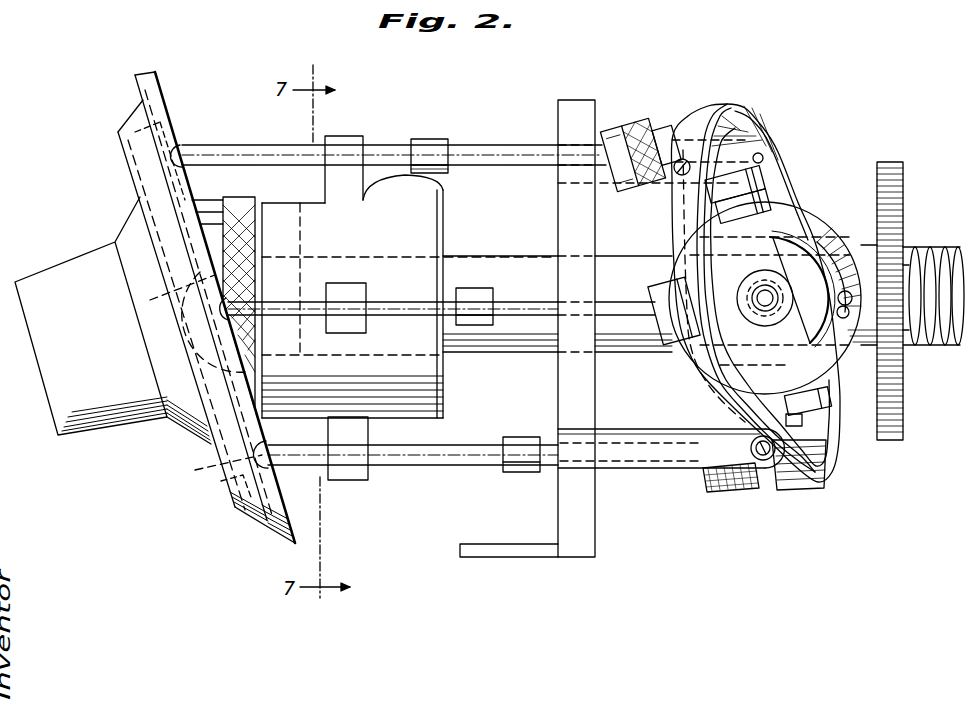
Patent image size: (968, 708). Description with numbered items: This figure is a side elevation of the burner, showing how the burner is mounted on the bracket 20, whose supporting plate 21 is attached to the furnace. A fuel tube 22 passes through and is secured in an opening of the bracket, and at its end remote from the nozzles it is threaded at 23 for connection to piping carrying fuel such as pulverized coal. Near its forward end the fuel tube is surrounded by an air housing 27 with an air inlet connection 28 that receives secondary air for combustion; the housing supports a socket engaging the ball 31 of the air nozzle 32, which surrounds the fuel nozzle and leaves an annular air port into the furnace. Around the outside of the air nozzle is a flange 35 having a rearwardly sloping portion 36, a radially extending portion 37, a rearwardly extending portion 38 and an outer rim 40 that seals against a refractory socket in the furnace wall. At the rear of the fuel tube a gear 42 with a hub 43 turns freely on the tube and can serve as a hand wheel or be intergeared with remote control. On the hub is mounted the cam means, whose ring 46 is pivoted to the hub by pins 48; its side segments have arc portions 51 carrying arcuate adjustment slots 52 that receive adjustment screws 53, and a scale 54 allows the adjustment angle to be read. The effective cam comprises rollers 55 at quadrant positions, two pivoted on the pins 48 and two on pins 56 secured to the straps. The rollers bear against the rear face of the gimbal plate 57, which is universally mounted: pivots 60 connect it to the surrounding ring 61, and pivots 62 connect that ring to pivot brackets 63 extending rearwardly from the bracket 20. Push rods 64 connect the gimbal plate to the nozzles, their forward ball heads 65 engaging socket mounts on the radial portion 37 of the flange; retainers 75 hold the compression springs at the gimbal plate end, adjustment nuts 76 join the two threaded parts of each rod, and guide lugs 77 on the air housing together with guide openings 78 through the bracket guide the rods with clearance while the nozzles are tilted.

The bracket 20 is at (597, 545).
The supporting plate 21 is at (505, 557).
The fuel tube 22 is at (497, 267).
The threaded end of fuel tube 23 is at (920, 348).
The air housing 27 is at (408, 304).
The air inlet connection 28 is at (408, 193).
The ball 31 is at (207, 207).
The air nozzle 32 is at (130, 316).
The flange 35 is at (127, 157).
The rearwardly sloping portion 36 is at (185, 432).
The radially extending portion 37 is at (221, 481).
The rearwardly extending portion 38 is at (249, 514).
The outer rim 40 is at (284, 540).
The gear 42 is at (891, 441).
The hub 43 is at (845, 227).
The ring 46 is at (766, 184).
The pins 48 is at (770, 292).
The arc portions 51 is at (833, 353).
The arcuate adjustment slots 52 is at (823, 218).
The adjustment screws 53 is at (842, 298).
The scale 54 is at (862, 255).
The rollers 55 is at (765, 172).
The pins 56 is at (826, 419).
The gimbal plate 57 is at (672, 130).
The pivots 60 is at (678, 176).
The ring 61 is at (817, 490).
The pivots 62 is at (764, 460).
The pivot brackets 63 is at (650, 470).
The push rods 64 is at (476, 145).
The ball heads 65 is at (196, 148).
The retainers 75 is at (720, 492).
The adjustment nuts 76 is at (427, 140).
The guide lugs 77 is at (345, 140).
The guide openings 78 is at (597, 138).